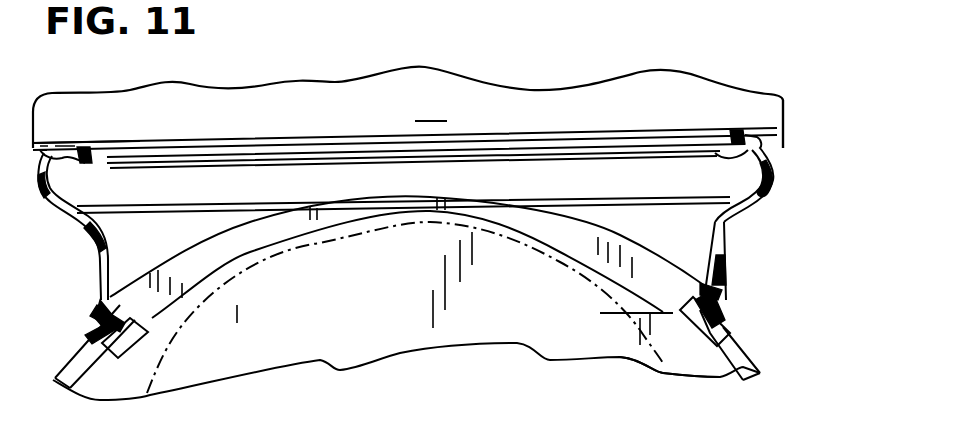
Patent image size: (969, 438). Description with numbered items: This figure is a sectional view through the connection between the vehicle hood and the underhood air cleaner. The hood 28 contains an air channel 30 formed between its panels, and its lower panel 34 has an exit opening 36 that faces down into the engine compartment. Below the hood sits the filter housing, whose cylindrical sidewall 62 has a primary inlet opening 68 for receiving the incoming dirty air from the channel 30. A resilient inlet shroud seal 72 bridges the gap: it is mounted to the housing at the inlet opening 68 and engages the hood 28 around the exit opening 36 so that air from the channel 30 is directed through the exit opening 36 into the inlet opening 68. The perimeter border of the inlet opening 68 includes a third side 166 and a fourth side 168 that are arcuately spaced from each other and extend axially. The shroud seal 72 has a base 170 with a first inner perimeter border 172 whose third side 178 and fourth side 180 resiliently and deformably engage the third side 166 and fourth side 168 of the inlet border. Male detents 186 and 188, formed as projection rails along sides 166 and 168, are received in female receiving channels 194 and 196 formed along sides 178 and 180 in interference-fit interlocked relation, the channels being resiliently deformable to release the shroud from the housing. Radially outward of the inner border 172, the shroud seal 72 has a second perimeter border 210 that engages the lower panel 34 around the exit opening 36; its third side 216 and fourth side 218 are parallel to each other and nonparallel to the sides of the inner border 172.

The hood 28 is at (356, 73).
The air channel 30 is at (405, 131).
The lower panel 34 is at (783, 143).
The exit opening 36 is at (130, 145).
The cylindrical sidewall 62 is at (745, 366).
The inlet opening 68 is at (404, 202).
The resilient inlet shroud seal 72 is at (738, 205).
The third side 166 is at (720, 360).
The fourth side 168 is at (117, 374).
The base 170 is at (730, 272).
The perimeter border 172 is at (108, 291).
The third side 178 is at (620, 312).
The fourth side 180 is at (140, 318).
The third detent 186 is at (712, 318).
The fourth detent 188 is at (93, 338).
The receiving channel 194 is at (700, 290).
The receiving channel 196 is at (92, 340).
The second perimeter border 210 is at (780, 153).
The third side 216 is at (745, 150).
The fourth side 218 is at (62, 158).